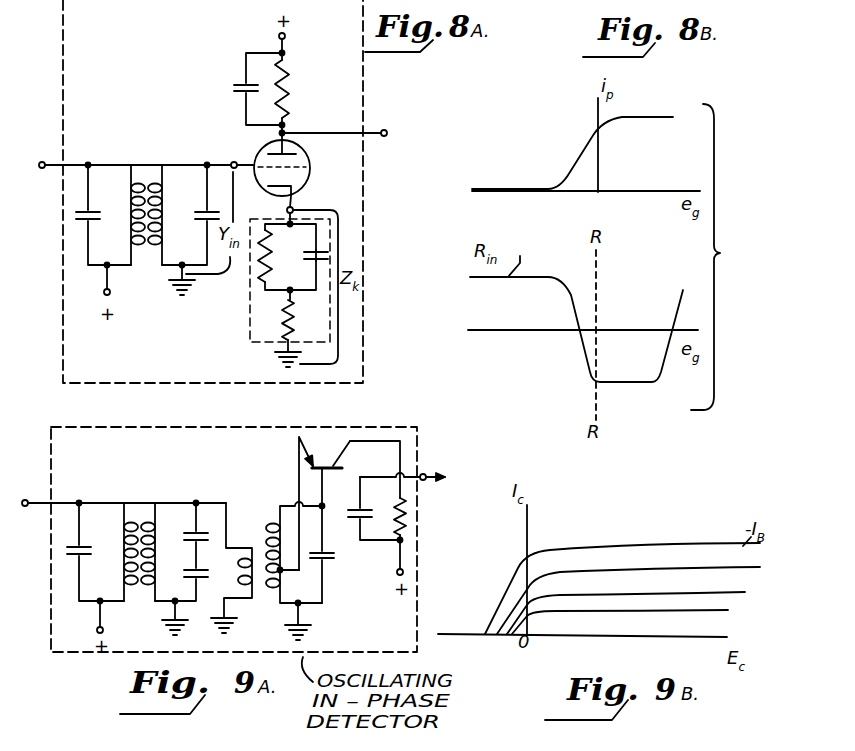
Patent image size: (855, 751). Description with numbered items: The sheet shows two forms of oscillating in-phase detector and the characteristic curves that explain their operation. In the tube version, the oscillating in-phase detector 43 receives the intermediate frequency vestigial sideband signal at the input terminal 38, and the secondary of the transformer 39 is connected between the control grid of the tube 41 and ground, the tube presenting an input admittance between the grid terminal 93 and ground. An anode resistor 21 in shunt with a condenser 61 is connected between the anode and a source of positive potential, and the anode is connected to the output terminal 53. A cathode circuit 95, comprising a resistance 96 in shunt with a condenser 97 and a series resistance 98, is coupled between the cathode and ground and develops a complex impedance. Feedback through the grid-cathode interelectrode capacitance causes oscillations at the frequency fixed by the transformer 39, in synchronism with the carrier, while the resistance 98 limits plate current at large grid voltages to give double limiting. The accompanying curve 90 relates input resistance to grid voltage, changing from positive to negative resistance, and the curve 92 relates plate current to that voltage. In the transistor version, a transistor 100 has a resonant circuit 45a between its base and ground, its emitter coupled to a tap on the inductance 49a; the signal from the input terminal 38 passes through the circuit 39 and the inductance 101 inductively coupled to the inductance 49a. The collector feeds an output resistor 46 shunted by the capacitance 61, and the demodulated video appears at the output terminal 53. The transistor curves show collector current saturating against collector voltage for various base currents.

In FIG. 8A, the anode resistor 21 is at (292, 88).
In FIG. 8A, the input terminal 38 is at (42, 161).
In FIG. 9A, the input terminal 38 is at (25, 500).
In FIG. 8A, the transformer 39 is at (159, 151).
In FIG. 9A, the transformer 39 is at (148, 494).
In FIG. 8A, the tube 41 is at (308, 166).
In FIG. 8A, the oscillating in-phase detector 43 is at (364, 79).
In FIG. 9A, the oscillating in-phase detector 43 is at (417, 577).
In FIG. 9A, the resonant circuit 45a is at (302, 586).
In FIG. 9A, the output resistor 46 is at (410, 521).
In FIG. 9A, the inductance 49a is at (268, 519).
In FIG. 8A, the output terminal 53 is at (387, 130).
In FIG. 9A, the output terminal 53 is at (426, 475).
In FIG. 8A, the condenser 61 is at (236, 82).
In FIG. 9A, the condenser 61 is at (352, 509).
In FIG. 8B, the curve 90 is at (546, 282).
In FIG. 8B, the curve 92 is at (644, 116).
In FIG. 8A, the grid terminal 93 is at (235, 161).
In FIG. 8A, the cathode circuit 95 is at (259, 345).
In FIG. 8A, the resistance 96 is at (256, 280).
In FIG. 8A, the condenser 97 is at (319, 263).
In FIG. 8A, the resistance 98 is at (283, 315).
In FIG. 9A, the transistor 100 is at (328, 465).
In FIG. 9A, the inductance 101 is at (258, 552).